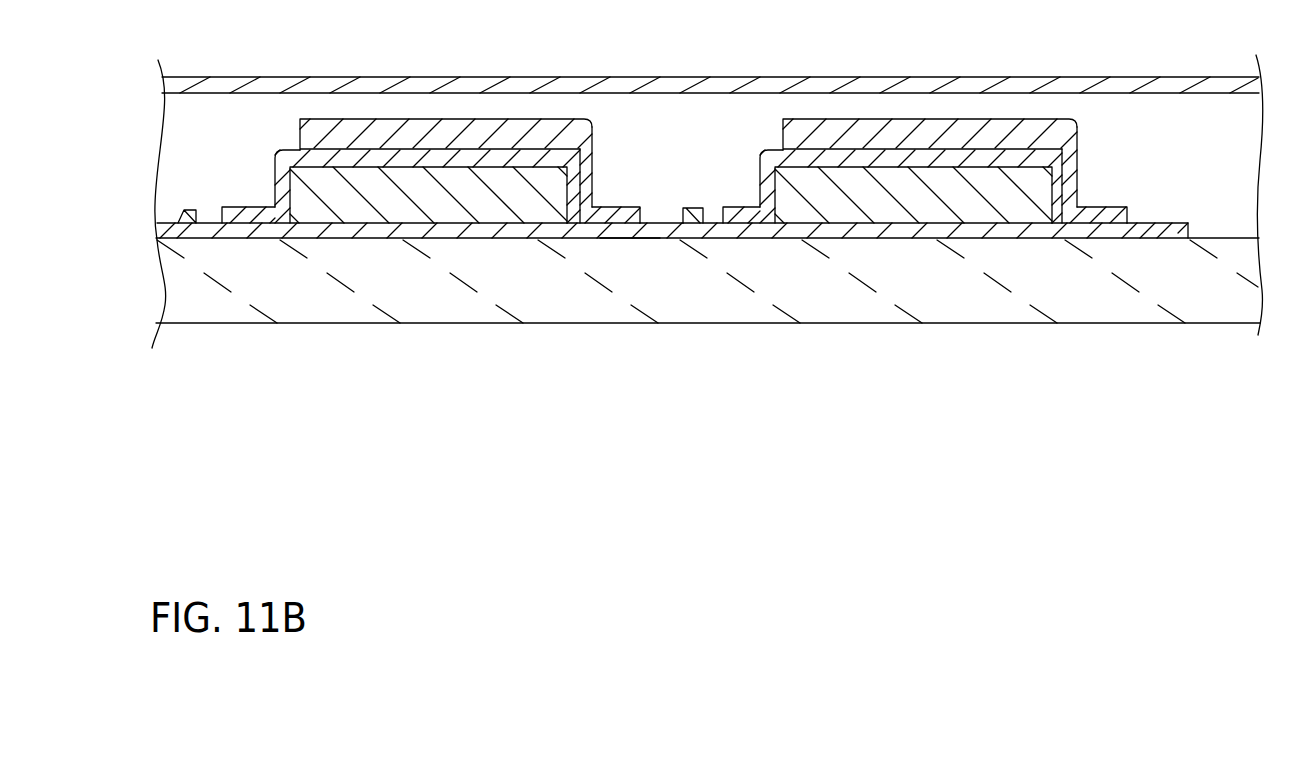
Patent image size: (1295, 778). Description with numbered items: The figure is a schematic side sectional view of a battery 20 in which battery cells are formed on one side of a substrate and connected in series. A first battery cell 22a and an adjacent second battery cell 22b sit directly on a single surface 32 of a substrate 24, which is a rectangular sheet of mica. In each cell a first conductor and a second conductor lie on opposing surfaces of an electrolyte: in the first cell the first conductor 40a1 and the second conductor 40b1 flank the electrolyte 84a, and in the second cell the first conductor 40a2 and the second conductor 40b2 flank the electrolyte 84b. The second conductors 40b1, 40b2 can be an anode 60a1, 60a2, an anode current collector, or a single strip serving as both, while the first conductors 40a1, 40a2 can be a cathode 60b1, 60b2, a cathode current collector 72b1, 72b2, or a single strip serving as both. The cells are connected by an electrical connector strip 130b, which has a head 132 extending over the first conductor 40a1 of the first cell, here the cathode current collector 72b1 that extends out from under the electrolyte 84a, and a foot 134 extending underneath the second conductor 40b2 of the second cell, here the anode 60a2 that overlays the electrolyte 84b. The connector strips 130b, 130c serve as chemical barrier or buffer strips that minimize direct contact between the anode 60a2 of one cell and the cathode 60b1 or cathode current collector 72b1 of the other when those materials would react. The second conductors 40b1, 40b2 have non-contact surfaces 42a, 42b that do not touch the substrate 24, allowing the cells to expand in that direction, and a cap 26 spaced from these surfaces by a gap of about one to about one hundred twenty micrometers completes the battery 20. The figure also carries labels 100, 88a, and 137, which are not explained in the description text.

The battery 20 is at (1066, 38).
The first battery cell 22a is at (1006, 115).
The second battery cell 22b is at (516, 115).
The substrate 24 is at (710, 309).
The cap 26 is at (660, 77).
The single surface 32 is at (1248, 233).
The first conductor of first battery cell 40a1 is at (713, 210).
The first conductor of second battery cell 40a2 is at (208, 215).
The second conductor of first battery cell 40b1 is at (1091, 200).
The second conductor of second battery cell 40b2 is at (603, 200).
The non-contact surface 42a is at (1075, 115).
The non-contact surface 42b is at (586, 115).
The anode 60a1 is at (884, 140).
The anode 60a2 is at (395, 140).
The cathode 60b1 is at (937, 204).
The cathode 60b2 is at (447, 207).
The cathode current collector 72b1 is at (805, 233).
The cathode current collector 72b2 is at (290, 232).
The electrolyte 84a is at (812, 158).
The electrolyte 84b is at (322, 158).
The contact pad 88a is at (1158, 219).
The device structure 100 is at (279, 125).
The electrical connector strip 130b is at (660, 222).
The electrical connector strip 130c is at (160, 223).
The head 132 is at (698, 206).
The foot 134 is at (603, 222).
The conductive layer gap region 137 is at (618, 238).